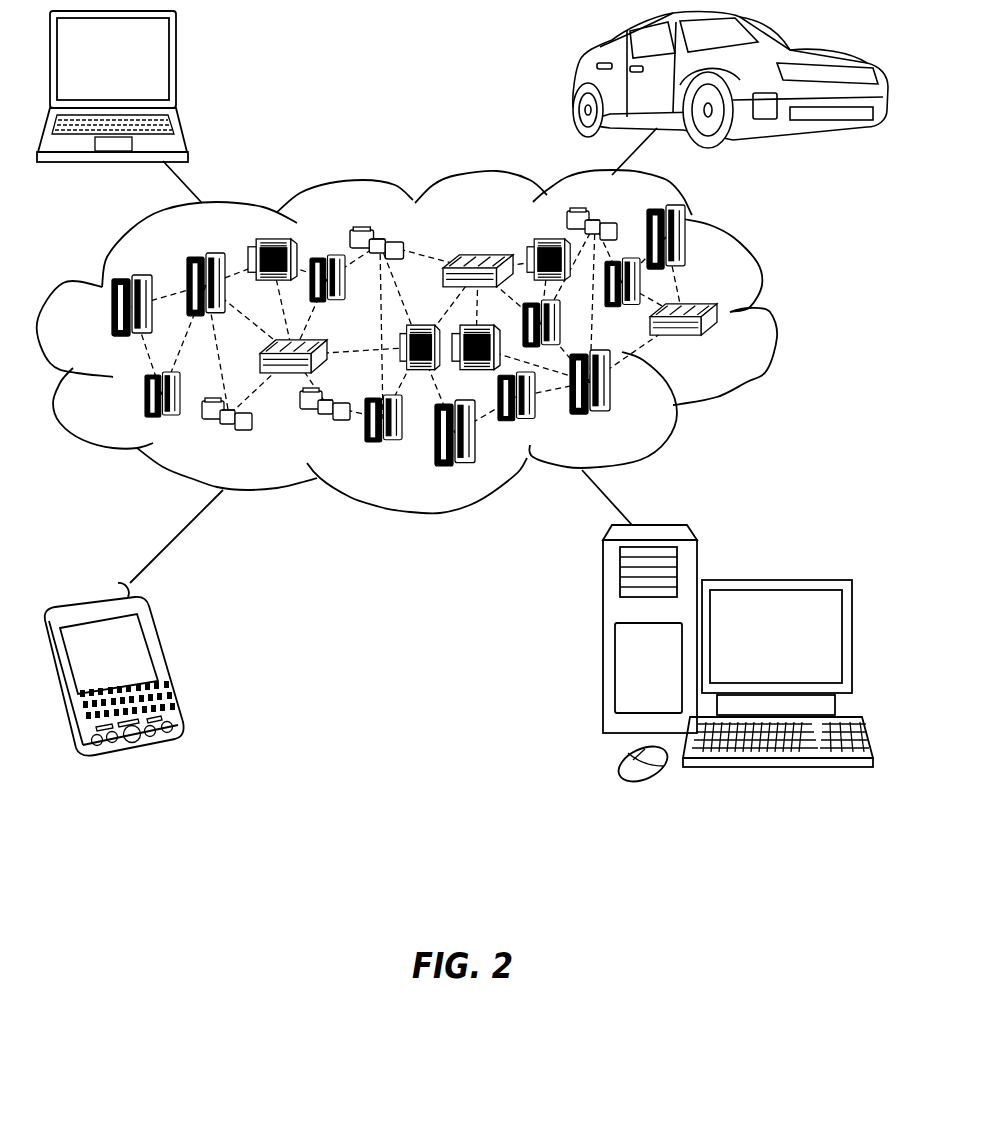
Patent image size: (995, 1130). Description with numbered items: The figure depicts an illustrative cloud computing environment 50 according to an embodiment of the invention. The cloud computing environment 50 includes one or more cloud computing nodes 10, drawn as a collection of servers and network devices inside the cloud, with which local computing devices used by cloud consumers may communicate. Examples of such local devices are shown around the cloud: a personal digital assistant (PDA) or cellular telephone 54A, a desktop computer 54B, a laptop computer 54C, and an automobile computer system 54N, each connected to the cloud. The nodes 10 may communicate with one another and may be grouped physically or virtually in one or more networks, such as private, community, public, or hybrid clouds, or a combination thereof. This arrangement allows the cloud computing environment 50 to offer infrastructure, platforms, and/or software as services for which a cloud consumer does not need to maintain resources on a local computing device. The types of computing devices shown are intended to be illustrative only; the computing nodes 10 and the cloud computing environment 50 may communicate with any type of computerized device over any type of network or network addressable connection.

The cloud computing environment 50 is at (778, 311).
The cloud computing nodes 10 is at (722, 343).
The personal digital assistant (PDA) or cellular telephone 54A is at (172, 662).
The desktop computer 54B is at (775, 579).
The laptop computer 54C is at (177, 67).
The automobile computer system 54N is at (573, 83).